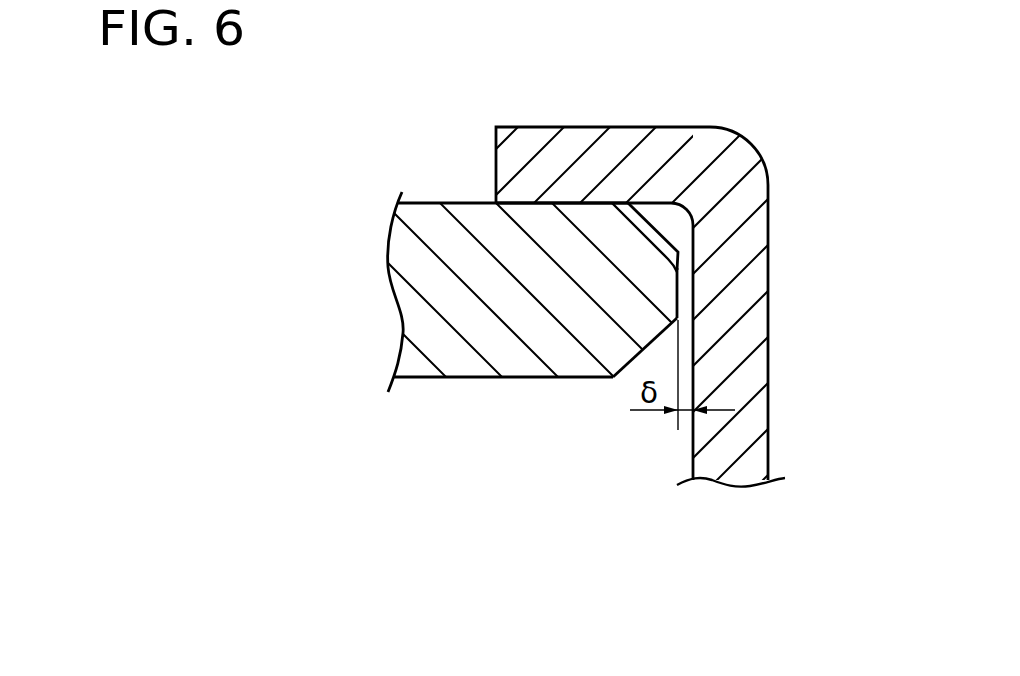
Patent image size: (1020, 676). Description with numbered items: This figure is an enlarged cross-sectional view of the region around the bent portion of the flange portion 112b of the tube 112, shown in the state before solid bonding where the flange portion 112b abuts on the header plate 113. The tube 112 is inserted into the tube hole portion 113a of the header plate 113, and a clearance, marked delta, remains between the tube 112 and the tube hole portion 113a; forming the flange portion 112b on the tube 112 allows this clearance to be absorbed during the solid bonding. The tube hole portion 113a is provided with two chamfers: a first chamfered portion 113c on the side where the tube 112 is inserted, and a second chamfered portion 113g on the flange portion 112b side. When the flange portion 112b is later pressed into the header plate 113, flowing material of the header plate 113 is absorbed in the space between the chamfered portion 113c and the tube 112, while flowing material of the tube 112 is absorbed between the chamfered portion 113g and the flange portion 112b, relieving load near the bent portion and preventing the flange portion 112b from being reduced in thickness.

The tube 112 is at (716, 453).
The flange portion 112b is at (548, 167).
The header plate 113 is at (444, 228).
The chamfered portion 113g is at (655, 230).
The tube hole portion 113a is at (678, 285).
The chamfered portion 113c is at (645, 352).